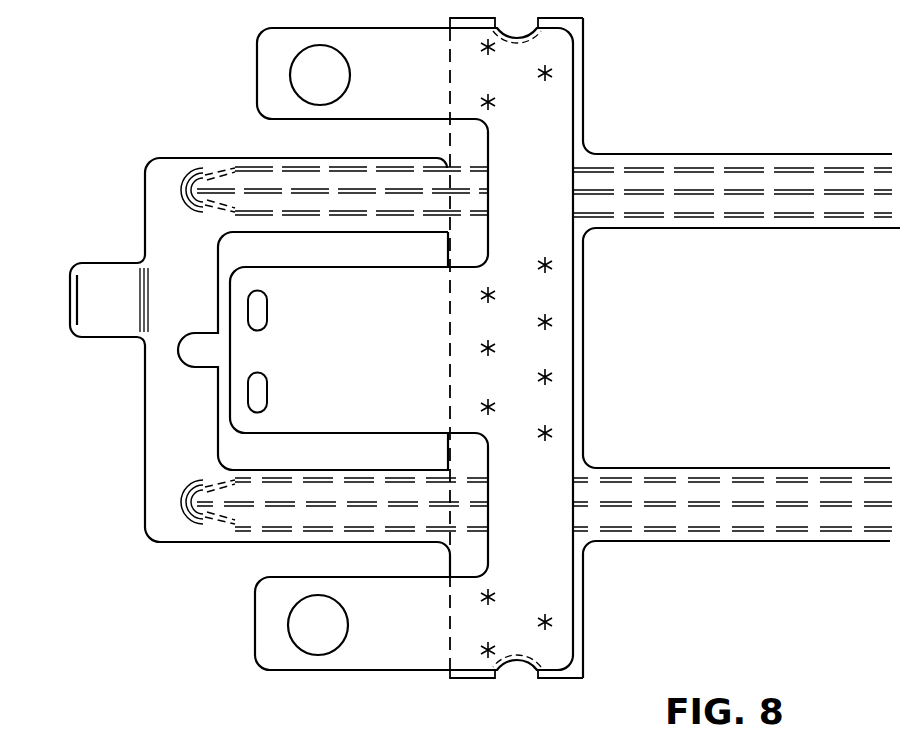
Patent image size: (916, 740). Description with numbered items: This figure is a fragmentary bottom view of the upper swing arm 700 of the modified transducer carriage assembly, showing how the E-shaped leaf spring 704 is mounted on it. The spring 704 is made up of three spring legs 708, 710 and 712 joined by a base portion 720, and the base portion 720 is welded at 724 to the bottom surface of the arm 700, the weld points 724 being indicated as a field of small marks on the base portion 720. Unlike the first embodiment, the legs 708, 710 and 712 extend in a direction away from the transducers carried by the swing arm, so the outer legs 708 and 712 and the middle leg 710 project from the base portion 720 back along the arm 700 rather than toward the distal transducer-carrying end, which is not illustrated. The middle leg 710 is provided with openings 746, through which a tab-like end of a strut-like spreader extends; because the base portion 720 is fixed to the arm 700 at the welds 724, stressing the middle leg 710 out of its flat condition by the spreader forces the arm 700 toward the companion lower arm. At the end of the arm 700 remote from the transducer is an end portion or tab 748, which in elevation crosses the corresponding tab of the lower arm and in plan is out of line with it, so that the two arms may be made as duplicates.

The swing arm 700 is at (792, 488).
The E-shaped leaf spring 704 is at (582, 86).
The spring leg 708 is at (255, 635).
The middle spring leg 710 is at (370, 399).
The spring leg 712 is at (257, 75).
The base portion 720 is at (562, 285).
The weld 724 is at (555, 427).
The opening 746 is at (268, 322).
The end portion or tab 748 is at (103, 272).